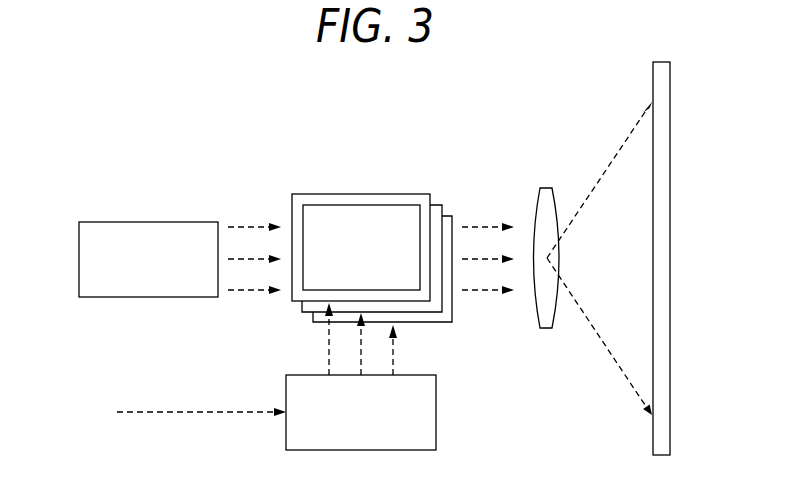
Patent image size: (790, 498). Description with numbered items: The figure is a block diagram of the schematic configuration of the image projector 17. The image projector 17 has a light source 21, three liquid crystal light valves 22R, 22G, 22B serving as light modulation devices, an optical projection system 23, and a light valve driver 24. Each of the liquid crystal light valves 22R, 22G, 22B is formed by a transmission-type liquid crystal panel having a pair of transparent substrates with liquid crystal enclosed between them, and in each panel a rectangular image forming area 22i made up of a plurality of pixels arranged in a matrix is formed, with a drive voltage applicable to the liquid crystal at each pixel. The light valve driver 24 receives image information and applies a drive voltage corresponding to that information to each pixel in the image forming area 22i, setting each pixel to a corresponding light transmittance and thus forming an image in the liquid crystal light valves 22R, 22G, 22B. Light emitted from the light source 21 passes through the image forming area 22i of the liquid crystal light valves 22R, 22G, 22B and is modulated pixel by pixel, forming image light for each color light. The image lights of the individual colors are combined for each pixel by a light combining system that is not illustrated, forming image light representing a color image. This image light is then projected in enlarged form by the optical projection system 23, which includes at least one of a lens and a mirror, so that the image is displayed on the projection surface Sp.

The image projector 17 is at (145, 107).
The light source 21 is at (170, 222).
The liquid crystal light valve 22R is at (376, 194).
The liquid crystal light valve 22G is at (440, 205).
The liquid crystal light valve 22B is at (446, 216).
The image forming area 22i is at (312, 280).
The optical projection system 23 is at (547, 190).
The light valve driver 24 is at (425, 375).
The projection surface Sp is at (653, 80).